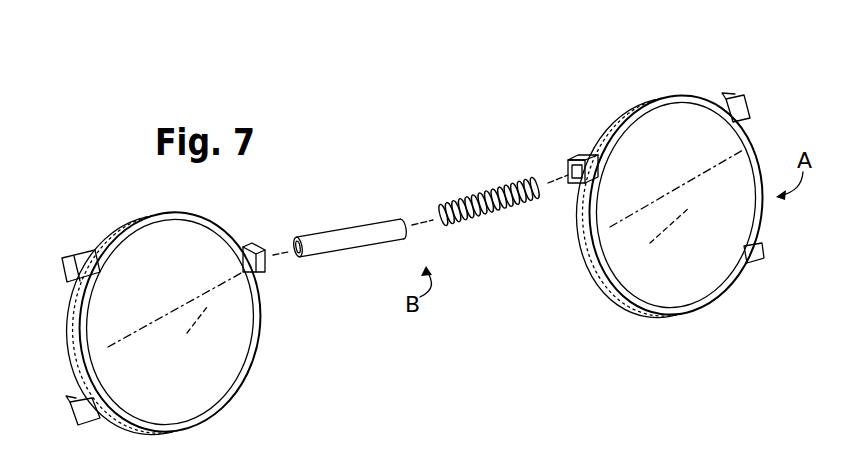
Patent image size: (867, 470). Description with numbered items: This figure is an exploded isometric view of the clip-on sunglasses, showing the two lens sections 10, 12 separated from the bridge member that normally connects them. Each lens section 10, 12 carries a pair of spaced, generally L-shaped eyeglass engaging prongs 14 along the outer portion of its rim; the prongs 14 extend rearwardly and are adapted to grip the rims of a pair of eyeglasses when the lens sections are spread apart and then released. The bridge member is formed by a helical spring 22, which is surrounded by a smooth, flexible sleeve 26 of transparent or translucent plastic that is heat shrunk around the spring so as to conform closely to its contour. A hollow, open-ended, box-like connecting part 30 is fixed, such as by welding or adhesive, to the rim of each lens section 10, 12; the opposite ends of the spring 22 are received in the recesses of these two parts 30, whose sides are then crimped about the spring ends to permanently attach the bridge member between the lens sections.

The lens section 10 is at (170, 396).
The lens section 12 is at (715, 263).
The eyeglass engaging prong 14 is at (87, 272).
The helical spring 22 is at (494, 195).
The sleeve 26 is at (353, 233).
The connecting part 30 is at (250, 246).